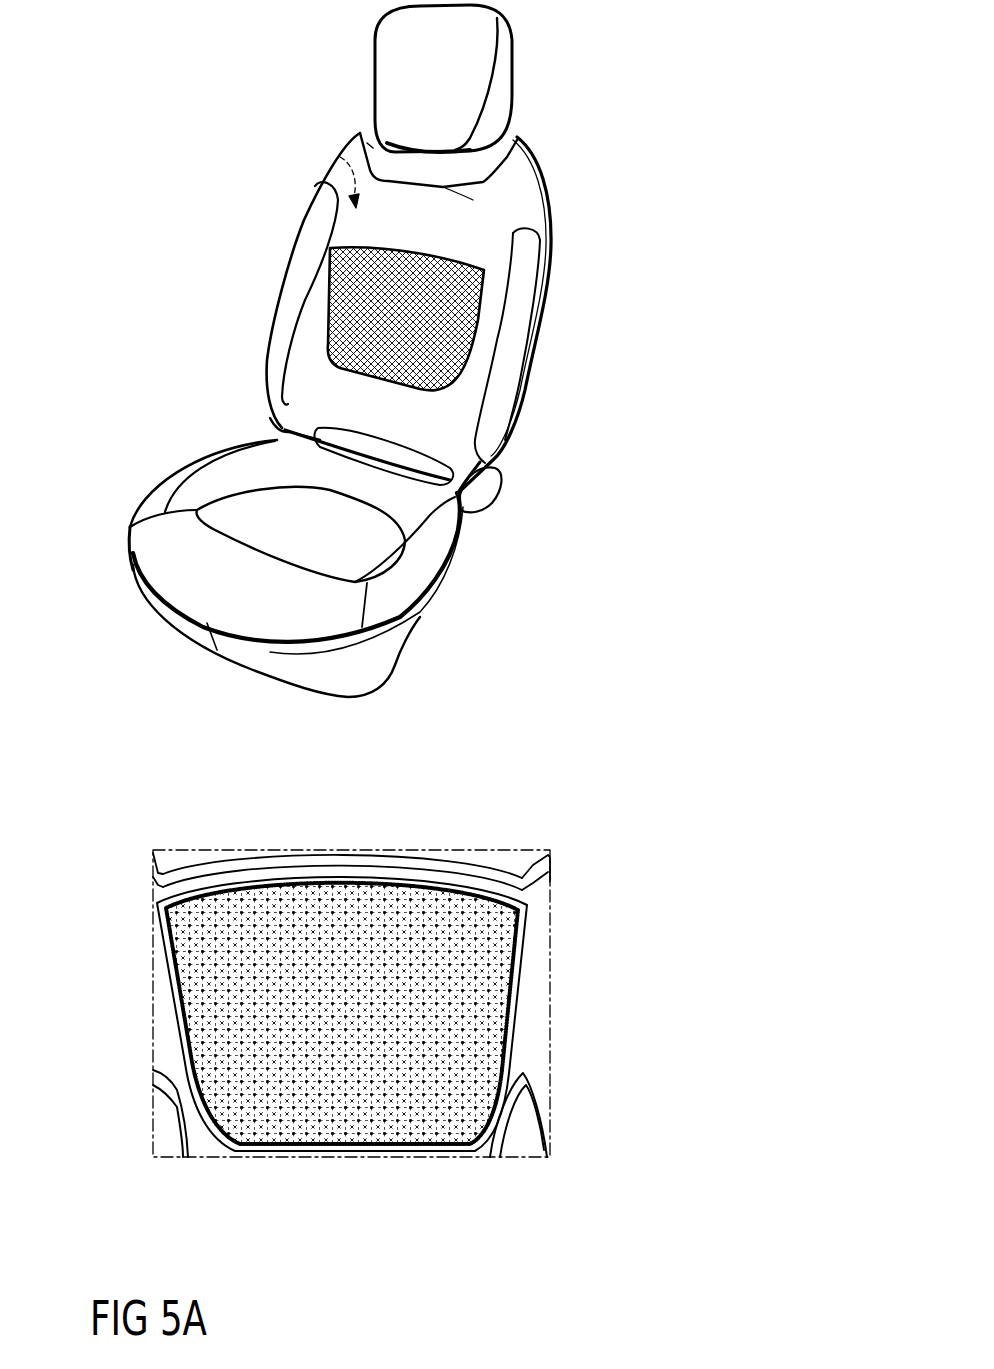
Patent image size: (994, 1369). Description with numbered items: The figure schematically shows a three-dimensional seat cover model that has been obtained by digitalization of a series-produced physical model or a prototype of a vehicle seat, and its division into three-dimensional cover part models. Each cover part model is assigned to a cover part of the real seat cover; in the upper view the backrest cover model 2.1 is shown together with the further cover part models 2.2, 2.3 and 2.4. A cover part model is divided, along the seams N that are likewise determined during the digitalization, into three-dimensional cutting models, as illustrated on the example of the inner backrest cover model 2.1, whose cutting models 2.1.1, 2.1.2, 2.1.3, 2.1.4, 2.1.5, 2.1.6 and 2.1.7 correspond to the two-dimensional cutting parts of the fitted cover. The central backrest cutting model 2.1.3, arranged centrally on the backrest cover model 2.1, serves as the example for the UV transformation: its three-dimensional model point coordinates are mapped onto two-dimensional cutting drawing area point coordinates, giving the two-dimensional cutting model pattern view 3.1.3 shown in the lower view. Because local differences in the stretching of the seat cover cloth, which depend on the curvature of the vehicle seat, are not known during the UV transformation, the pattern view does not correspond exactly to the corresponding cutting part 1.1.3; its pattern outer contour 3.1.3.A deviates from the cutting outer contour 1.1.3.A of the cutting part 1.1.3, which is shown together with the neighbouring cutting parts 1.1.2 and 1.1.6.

The cover part model 2.4 is at (483, 53).
The cutting model 2.1.7 is at (360, 133).
The cover part model 2.3 is at (334, 153).
The backrest cover model 2.1 is at (260, 361).
The cutting model 2.1.1 is at (280, 298).
The central backrest cutting model 2.1.3 is at (457, 293).
The cutting model 2.1.4 is at (503, 373).
The cutting model 2.1.2 is at (410, 417).
The cutting model 2.1.6 is at (473, 200).
The cutting model 2.1.5 is at (283, 423).
The cover part model 2.2 is at (173, 568).
The seams N is at (507, 162).
The cutting part 1.1.6 is at (510, 860).
The cutting part 1.1.3 is at (414, 1060).
The cutting outer contour 1.1.3.A is at (414, 1060).
The cutting model pattern view 3.1.3 is at (320, 1130).
The pattern outer contour 3.1.3.A is at (227, 1137).
The cutting part 1.1.2 is at (530, 1113).